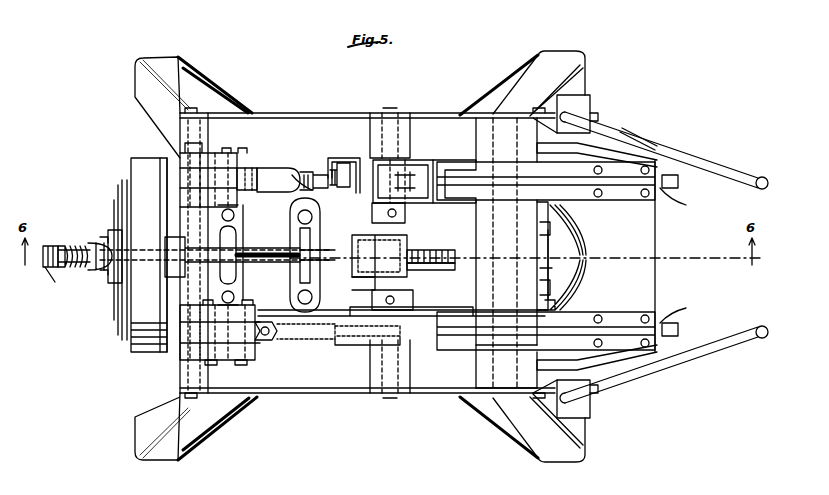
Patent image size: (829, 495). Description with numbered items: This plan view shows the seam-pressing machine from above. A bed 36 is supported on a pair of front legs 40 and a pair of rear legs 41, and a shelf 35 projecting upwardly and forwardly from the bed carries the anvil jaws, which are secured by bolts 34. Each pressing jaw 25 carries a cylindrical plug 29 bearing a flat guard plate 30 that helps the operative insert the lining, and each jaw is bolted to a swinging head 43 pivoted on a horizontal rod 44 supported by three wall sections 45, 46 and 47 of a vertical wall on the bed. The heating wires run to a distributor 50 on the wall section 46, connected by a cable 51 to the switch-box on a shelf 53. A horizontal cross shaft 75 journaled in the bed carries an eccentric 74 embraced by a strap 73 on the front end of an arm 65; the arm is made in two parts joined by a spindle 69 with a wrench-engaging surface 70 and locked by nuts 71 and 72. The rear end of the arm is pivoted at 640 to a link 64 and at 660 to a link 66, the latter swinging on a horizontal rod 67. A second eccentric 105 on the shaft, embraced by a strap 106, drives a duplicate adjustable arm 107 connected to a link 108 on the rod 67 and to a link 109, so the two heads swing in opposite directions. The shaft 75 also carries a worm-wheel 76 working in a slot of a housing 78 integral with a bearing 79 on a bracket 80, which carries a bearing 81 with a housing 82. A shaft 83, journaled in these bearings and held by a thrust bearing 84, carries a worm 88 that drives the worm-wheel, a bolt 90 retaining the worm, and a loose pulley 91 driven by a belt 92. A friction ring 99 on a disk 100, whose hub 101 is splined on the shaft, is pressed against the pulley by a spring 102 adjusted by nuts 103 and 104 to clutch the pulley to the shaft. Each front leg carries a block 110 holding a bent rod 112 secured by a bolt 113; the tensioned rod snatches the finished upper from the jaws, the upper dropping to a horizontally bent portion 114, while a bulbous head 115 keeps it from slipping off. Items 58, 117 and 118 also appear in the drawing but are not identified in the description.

The pressing jaw 25 is at (660, 160).
The cylindrical plug 29 is at (686, 268).
The flat guard plate 30 is at (680, 182).
The bolts 34 is at (648, 168).
The shelf 35 is at (655, 246).
The bed 36 is at (284, 113).
The front legs 40 is at (568, 52).
The rear legs 41 is at (168, 62).
The swinging head 43 is at (612, 150).
The horizontal rod 44 is at (540, 108).
The wall section 45 is at (485, 393).
The wall section 46 is at (478, 292).
The wall section 47 is at (488, 113).
The distributor 50 is at (540, 262).
The cable 51 is at (580, 297).
The shelf 53 is at (230, 104).
The nut 58 is at (268, 343).
The link 64 is at (252, 178).
The arm 65 is at (278, 180).
The link 66 is at (212, 160).
The horizontal rod 67 is at (192, 108).
The spindle 69 is at (290, 184).
The wrench-engaging surface 70 is at (330, 158).
The locking nut 71 is at (308, 170).
The locking nut 72 is at (345, 163).
The strap 73 is at (420, 165).
The eccentric 74 is at (445, 160).
The horizontal cross shaft 75 is at (396, 113).
The worm-wheel 76 is at (437, 270).
The housing 78 is at (372, 240).
The bearing 79 is at (335, 245).
The bracket 80 is at (367, 213).
The second bearing 81 is at (236, 217).
The housing 82 is at (248, 256).
The shaft 83 is at (170, 264).
The thrust bearing 84 is at (362, 272).
The worm 88 is at (395, 243).
The bolt 90 is at (418, 252).
The loose pulley 91 is at (124, 180).
The belt 92 is at (152, 158).
The friction ring 99 is at (136, 205).
The disk 100 is at (120, 200).
The hub 101 is at (102, 270).
The spring 102 is at (58, 270).
The spring tension adjusting and locking nut 103 is at (58, 246).
The spring tension adjusting and locking nut 104 is at (45, 245).
The second eccentric 105 is at (355, 337).
The strap 106 is at (325, 340).
The longitudinally adjustable arm 107 is at (236, 300).
The link 108 is at (200, 348).
The link 109 is at (285, 345).
The block 110 is at (585, 100).
The bent rod 112 is at (700, 162).
The bolt 113 is at (600, 116).
The horizontally bent portion 114 is at (640, 130).
The bulbous head 115 is at (768, 179).
The plate 117 is at (108, 278).
The collar 118 is at (86, 243).
The pivot 640 is at (240, 365).
The pivot 660 is at (248, 148).